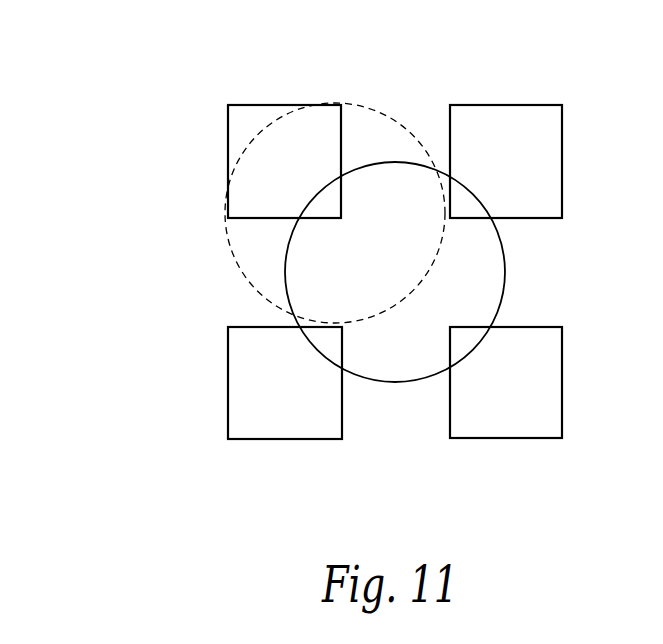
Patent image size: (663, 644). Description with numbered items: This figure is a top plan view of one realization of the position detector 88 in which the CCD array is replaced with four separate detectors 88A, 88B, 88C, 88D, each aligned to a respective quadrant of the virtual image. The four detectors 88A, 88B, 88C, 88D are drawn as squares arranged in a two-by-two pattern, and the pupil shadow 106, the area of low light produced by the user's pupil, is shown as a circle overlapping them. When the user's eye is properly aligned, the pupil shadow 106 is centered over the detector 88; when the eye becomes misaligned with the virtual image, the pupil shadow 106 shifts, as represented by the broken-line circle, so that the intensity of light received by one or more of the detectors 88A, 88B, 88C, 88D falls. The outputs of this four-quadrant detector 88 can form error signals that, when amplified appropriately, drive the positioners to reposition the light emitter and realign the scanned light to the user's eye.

The position detector 88 is at (140, 145).
The detector 88A is at (302, 173).
The detector 88B is at (522, 172).
The detector 88C is at (302, 395).
The detector 88D is at (522, 395).
The pupil shadow 106 is at (382, 112).